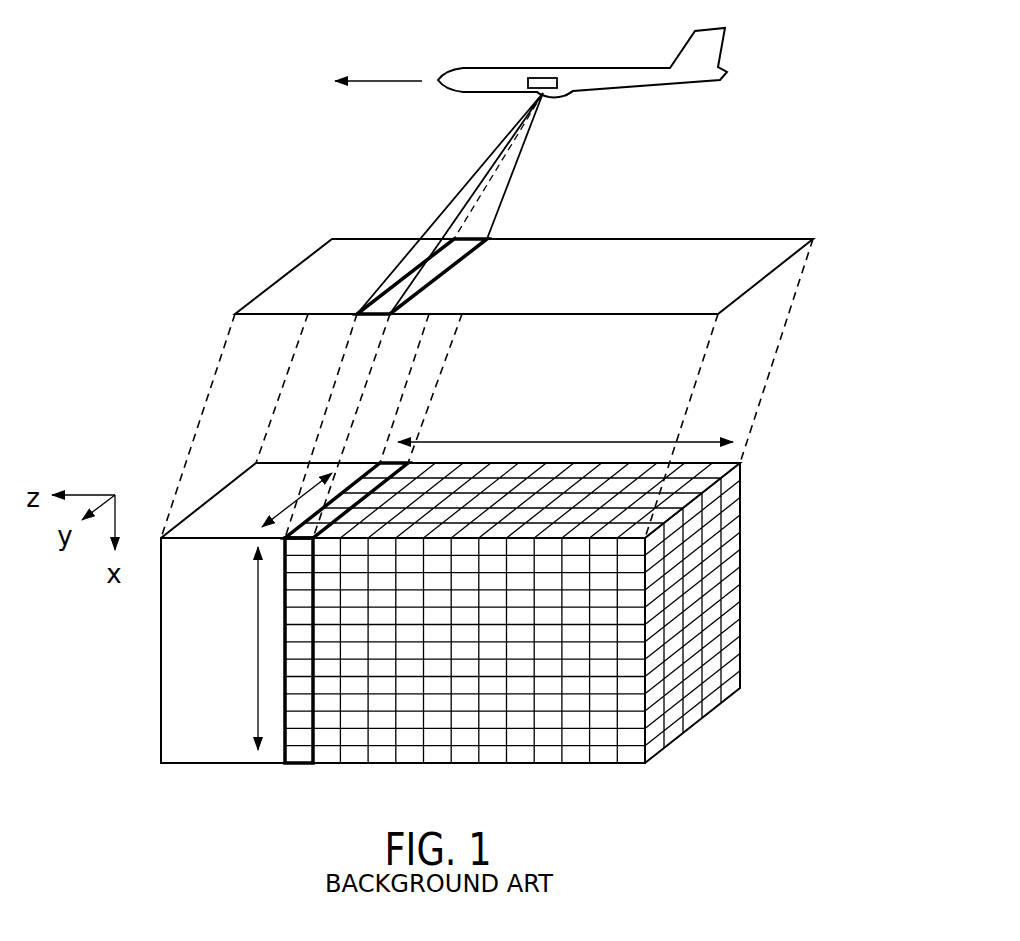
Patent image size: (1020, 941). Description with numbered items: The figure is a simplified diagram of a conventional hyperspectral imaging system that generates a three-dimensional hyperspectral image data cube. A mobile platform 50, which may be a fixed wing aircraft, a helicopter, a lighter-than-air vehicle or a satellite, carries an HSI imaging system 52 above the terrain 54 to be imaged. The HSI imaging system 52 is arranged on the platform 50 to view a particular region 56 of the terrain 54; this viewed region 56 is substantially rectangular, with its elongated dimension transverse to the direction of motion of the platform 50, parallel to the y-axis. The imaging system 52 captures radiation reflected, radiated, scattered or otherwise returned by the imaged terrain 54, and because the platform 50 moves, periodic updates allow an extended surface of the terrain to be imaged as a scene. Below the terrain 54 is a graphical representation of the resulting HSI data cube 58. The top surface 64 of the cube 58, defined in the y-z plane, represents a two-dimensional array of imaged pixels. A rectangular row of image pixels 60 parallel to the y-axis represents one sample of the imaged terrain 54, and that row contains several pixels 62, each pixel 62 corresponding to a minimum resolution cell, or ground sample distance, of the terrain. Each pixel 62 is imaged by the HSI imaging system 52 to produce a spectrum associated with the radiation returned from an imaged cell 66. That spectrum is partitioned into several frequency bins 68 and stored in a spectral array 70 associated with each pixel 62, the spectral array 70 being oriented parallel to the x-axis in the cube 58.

The mobile platform 50 is at (482, 67).
The HSI imaging system 52 is at (540, 78).
The terrain 54 is at (403, 238).
The viewed region 56 is at (400, 278).
The imaged cell 66 is at (357, 303).
The HSI data cube 58 is at (148, 680).
The row of image pixels 60 is at (367, 473).
The pixel 62 is at (288, 525).
The top surface of cube 64 is at (634, 497).
The frequency bins 68 is at (298, 763).
The spectral array 70 is at (283, 680).